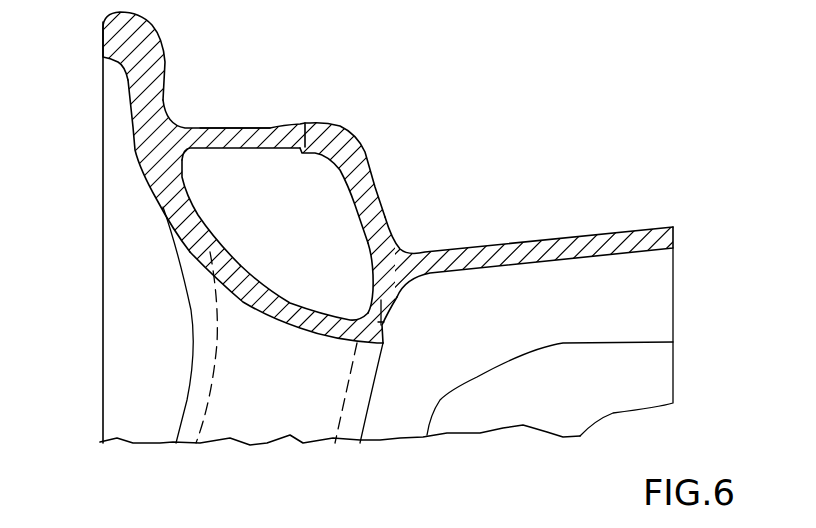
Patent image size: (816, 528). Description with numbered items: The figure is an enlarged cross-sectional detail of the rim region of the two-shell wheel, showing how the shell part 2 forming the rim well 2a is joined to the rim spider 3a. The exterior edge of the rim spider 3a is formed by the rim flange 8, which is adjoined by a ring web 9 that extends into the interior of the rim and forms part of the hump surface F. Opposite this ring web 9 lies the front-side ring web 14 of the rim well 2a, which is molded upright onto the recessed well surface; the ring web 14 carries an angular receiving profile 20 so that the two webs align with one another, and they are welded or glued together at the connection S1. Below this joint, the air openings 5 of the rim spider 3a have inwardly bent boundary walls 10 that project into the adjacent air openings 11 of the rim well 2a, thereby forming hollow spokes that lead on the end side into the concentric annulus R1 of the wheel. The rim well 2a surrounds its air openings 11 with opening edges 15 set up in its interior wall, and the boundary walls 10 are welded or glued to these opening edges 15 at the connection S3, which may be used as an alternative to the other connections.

The shell part 2 is at (616, 232).
The rim well 2a is at (505, 243).
The rim spider 3a is at (145, 173).
The air openings 5 is at (218, 407).
The rim flange 8 is at (107, 28).
The ring web 9 is at (200, 138).
The boundary walls 10 is at (287, 328).
The air openings 11 is at (355, 400).
The front-side ring web 14 is at (313, 124).
The opening edges 15 is at (370, 322).
The angular receiving profile 20 is at (303, 163).
The hump surface F is at (240, 128).
The concentric annulus R1 is at (212, 205).
The connection S1 is at (307, 126).
The connection S3 is at (380, 325).